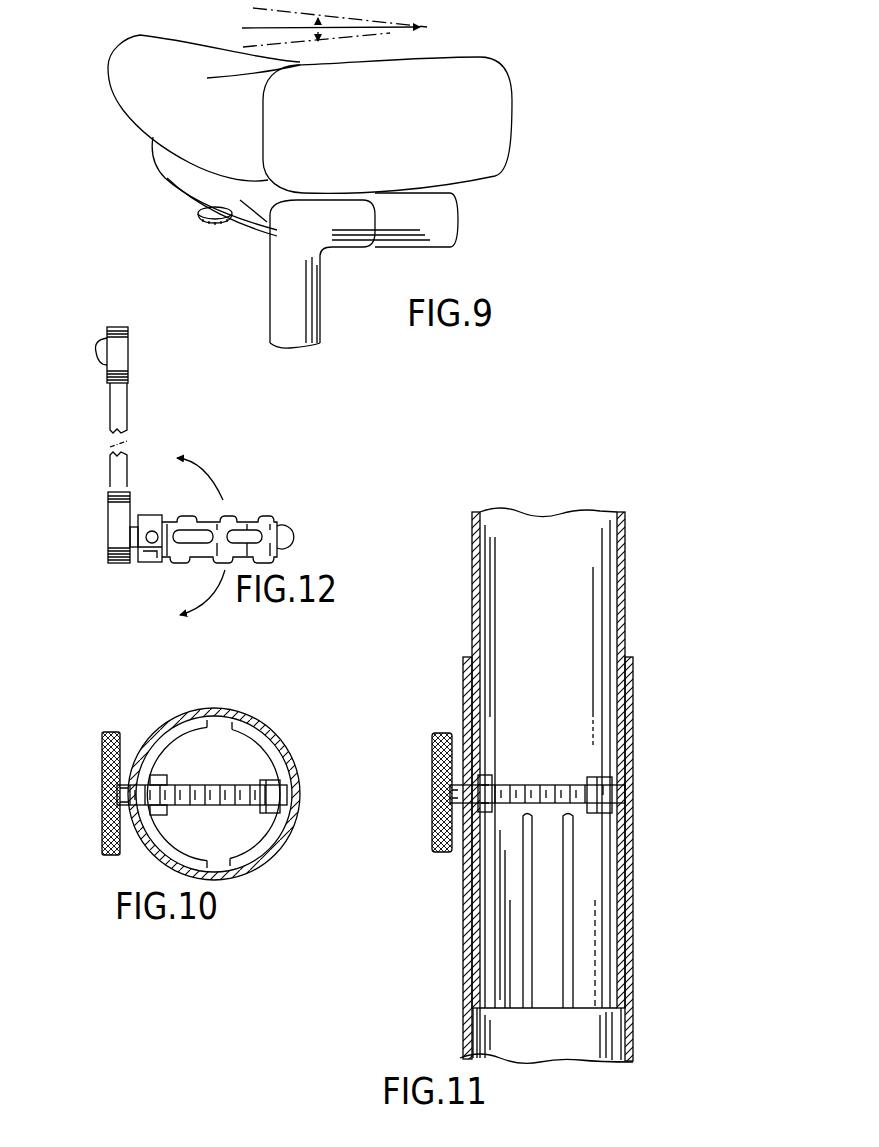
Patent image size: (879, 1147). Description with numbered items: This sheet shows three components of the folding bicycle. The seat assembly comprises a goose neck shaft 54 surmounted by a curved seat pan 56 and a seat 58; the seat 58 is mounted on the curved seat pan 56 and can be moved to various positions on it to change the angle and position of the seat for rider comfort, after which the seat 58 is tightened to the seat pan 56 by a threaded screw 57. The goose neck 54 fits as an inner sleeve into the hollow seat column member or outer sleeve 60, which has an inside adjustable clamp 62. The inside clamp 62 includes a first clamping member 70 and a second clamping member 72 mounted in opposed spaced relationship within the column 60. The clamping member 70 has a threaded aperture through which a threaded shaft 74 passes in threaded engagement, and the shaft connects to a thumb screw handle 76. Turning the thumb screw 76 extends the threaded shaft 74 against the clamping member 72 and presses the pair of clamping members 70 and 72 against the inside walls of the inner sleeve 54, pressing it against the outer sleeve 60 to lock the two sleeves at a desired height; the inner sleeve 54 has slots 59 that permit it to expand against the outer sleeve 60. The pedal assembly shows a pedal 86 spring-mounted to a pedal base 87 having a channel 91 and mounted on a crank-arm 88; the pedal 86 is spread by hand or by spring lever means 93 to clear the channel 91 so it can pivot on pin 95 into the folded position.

In FIG. 9, the goose neck shaft 54 is at (270, 284).
In FIG. 11, the goose neck shaft 54 is at (625, 615).
In FIG. 9, the seat pan 56 is at (183, 174).
In FIG. 9, the threaded screw 57 is at (207, 221).
In FIG. 9, the seat 58 is at (512, 100).
In FIG. 11, the slots 59 is at (565, 1010).
In FIG. 10, the seat column member 60 is at (288, 763).
In FIG. 11, the seat column member 60 is at (632, 693).
In FIG. 10, the inside adjustable clamp 62 is at (90, 752).
In FIG. 11, the inside adjustable clamp 62 is at (418, 746).
In FIG. 10, the first clamping member 70 is at (197, 727).
In FIG. 11, the first clamping member 70 is at (486, 775).
In FIG. 10, the second clamping member 72 is at (243, 727).
In FIG. 11, the second clamping member 72 is at (603, 780).
In FIG. 10, the threaded shaft 74 is at (232, 790).
In FIG. 11, the threaded shaft 74 is at (540, 787).
In FIG. 10, the thumb screw handle 76 is at (102, 805).
In FIG. 11, the thumb screw handle 76 is at (432, 813).
In FIG. 12, the pedal 86 is at (252, 523).
In FIG. 12, the pedal base 87 is at (145, 555).
In FIG. 12, the crank-arm 88 is at (122, 415).
In FIG. 12, the channel 91 is at (138, 547).
In FIG. 12, the spring lever means 93 is at (289, 530).
In FIG. 12, the pin 95 is at (153, 530).